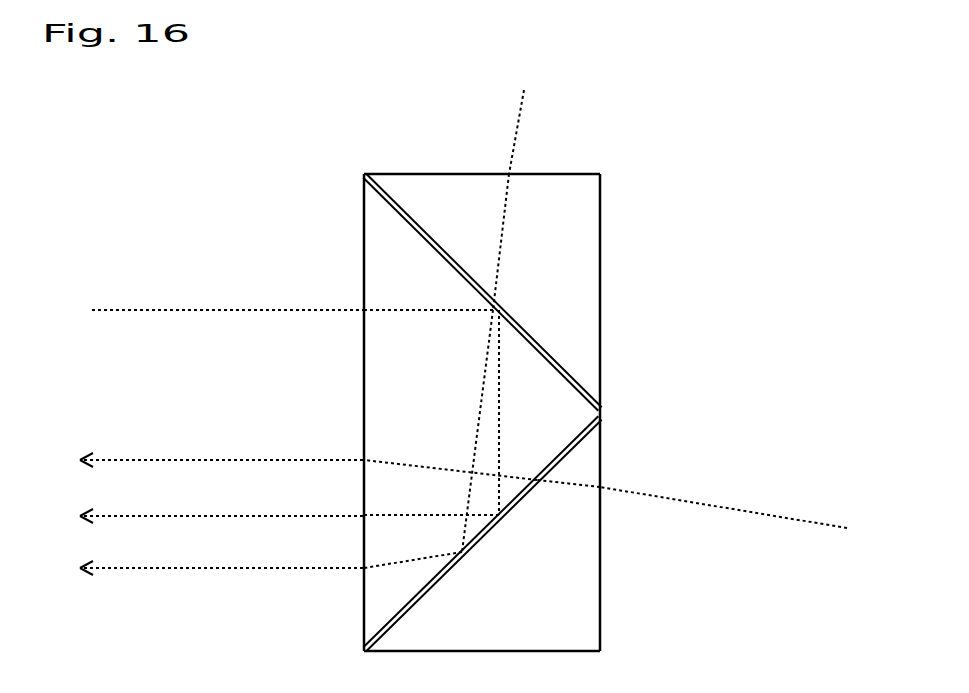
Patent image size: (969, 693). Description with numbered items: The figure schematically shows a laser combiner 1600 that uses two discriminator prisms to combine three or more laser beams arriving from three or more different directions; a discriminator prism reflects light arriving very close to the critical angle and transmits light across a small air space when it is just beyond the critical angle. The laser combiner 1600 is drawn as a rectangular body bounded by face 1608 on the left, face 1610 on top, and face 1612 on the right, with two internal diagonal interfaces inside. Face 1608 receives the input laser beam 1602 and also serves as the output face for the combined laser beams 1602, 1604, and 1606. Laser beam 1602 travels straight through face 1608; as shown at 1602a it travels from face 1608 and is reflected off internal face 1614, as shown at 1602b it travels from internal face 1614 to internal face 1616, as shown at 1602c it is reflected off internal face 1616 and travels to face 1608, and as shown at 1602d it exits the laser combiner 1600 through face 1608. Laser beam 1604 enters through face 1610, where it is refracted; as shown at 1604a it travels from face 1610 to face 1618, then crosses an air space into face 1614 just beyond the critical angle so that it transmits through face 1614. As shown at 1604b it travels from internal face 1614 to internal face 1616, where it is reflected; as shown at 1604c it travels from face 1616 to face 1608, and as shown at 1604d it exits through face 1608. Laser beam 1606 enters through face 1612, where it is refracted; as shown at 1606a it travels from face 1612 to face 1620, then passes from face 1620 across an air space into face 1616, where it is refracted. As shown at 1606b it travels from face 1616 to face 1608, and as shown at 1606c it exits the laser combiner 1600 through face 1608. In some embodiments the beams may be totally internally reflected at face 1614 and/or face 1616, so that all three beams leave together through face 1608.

The laser combiner 1600 is at (692, 128).
The input laser beam 1602 is at (143, 308).
The laser beam path from face 1608 to face 1614 1602a is at (425, 307).
The laser beam path from face 1614 to face 1616 1602b is at (500, 458).
The laser beam path from face 1616 to face 1608 1602c is at (390, 514).
The exiting laser beam 1602d is at (160, 517).
The laser beam 1604 is at (525, 100).
The laser beam path from face 1610 to face 1618 1604a is at (502, 238).
The laser beam path from face 1614 to face 1616 1604b is at (476, 428).
The laser beam path from face 1616 to face 1608 1604c is at (390, 566).
The exiting laser beam 1604d is at (155, 569).
The laser beam 1606 is at (760, 515).
The laser beam path from face 1612 to face 1620 1606a is at (565, 485).
The laser beam path from face 1616 to face 1608 1606b is at (395, 460).
The exiting laser beam 1606c is at (165, 458).
The face 1608 is at (364, 216).
The face 1610 is at (441, 173).
The face 1612 is at (600, 450).
The internal face 1614 is at (547, 357).
The internal face 1616 is at (384, 628).
The face 1618 is at (547, 356).
The face 1620 is at (430, 586).